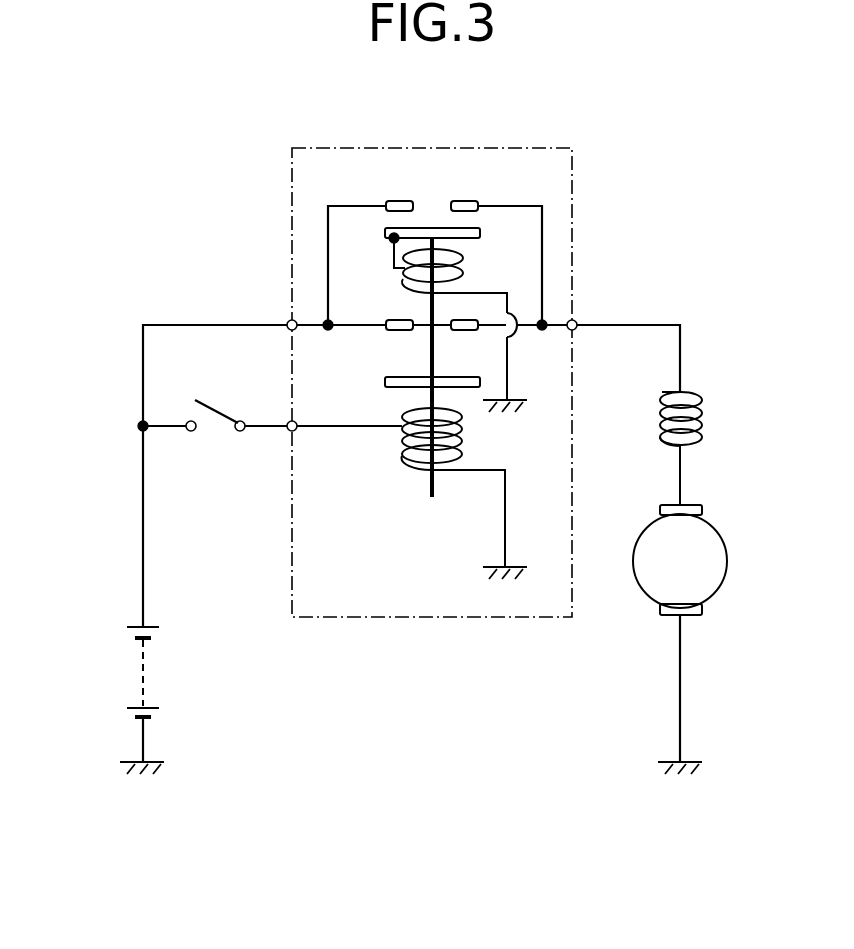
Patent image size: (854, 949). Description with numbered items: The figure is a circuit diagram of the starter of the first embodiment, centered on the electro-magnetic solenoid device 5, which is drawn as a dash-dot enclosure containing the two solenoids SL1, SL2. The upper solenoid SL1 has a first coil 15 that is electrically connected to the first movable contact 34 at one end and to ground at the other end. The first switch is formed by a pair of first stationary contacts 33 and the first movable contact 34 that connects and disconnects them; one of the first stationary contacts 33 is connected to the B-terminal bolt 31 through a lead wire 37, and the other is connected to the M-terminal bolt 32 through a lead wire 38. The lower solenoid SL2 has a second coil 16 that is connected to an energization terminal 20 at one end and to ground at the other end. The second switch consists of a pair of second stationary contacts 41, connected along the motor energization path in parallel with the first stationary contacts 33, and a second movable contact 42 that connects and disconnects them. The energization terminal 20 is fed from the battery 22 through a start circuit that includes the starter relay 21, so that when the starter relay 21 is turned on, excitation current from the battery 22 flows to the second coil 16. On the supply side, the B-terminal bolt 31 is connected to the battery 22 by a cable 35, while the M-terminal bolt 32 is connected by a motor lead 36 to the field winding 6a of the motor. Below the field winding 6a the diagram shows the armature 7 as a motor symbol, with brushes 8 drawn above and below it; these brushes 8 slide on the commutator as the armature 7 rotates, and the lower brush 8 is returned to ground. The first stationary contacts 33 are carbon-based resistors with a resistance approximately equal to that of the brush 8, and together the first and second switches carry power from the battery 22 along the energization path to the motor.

The electro-magnetic solenoid device 5 is at (309, 144).
The first stationary contacts 33 is at (396, 200).
The first movable contact 34 is at (478, 230).
The lead wire 37 is at (327, 228).
The lead wire 38 is at (544, 238).
The first coil 15 is at (464, 258).
The second stationary contacts 41 is at (455, 319).
The second movable contact 42 is at (385, 377).
The second coil 16 is at (464, 436).
The B-terminal bolt 31 is at (289, 321).
The M-terminal bolt 32 is at (576, 322).
The energization terminal 20 is at (289, 422).
The starter relay 21 is at (207, 400).
The cable 35 is at (143, 372).
The battery 22 is at (137, 682).
The motor lead 36 is at (665, 325).
The field winding 6a is at (705, 415).
The brushes 8 is at (693, 505).
The armature 7 is at (712, 580).
The first solenoid SL1 is at (574, 182).
The second solenoid SL2 is at (290, 511).